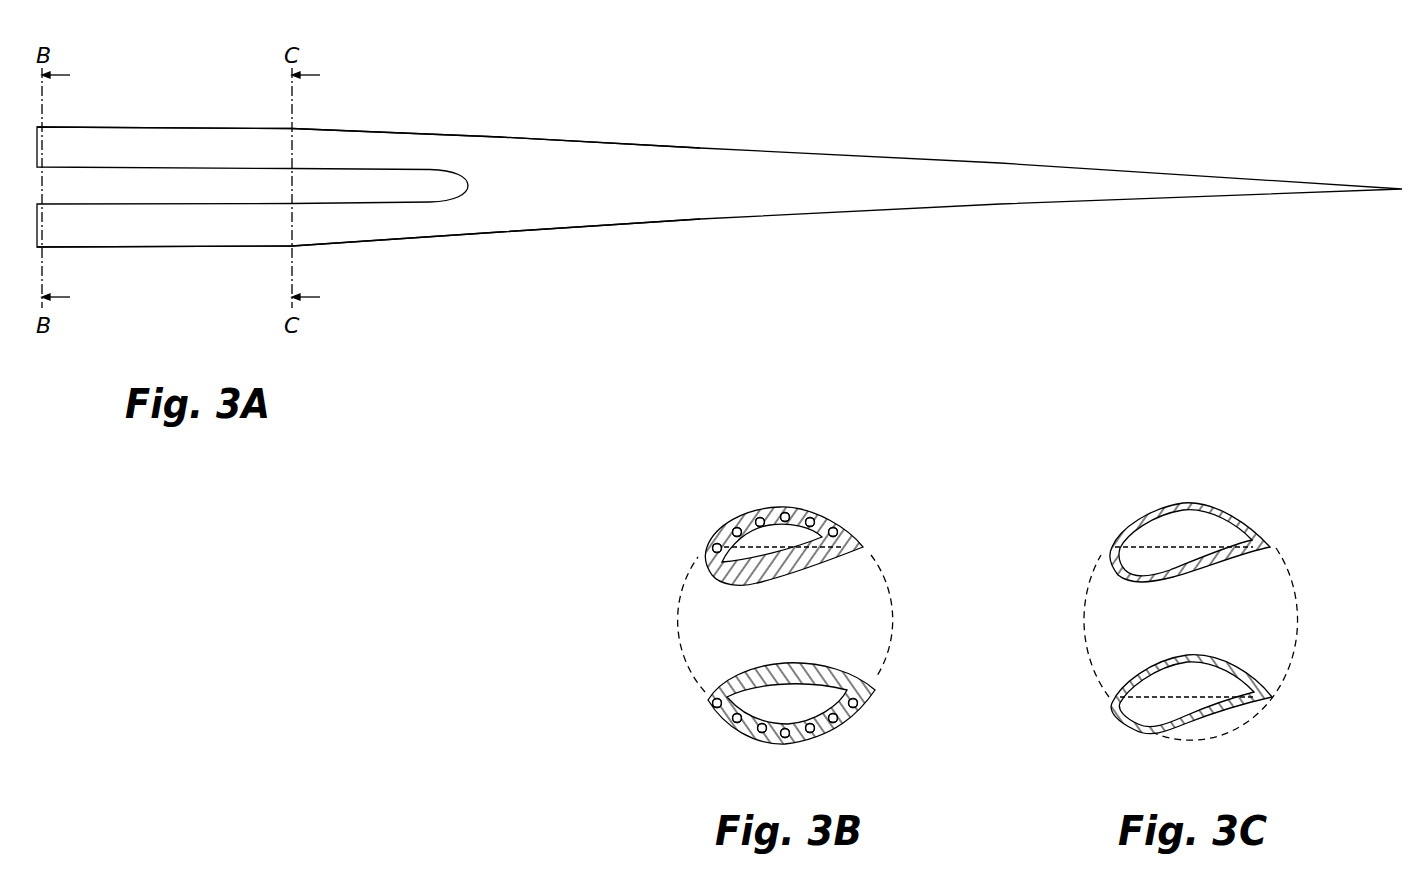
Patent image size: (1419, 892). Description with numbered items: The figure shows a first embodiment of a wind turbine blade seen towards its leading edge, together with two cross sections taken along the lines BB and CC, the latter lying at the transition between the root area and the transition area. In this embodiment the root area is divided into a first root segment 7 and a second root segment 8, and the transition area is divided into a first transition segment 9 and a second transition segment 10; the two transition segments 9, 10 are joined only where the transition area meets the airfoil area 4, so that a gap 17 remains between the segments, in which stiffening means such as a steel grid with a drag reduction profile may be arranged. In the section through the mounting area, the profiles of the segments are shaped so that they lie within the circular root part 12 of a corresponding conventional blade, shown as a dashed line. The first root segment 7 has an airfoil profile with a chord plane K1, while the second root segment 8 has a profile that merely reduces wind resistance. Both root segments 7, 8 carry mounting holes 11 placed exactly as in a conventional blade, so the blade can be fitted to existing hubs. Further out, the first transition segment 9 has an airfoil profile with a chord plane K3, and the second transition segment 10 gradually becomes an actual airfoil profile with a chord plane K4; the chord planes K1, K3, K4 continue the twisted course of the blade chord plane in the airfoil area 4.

In FIG. 3A, the airfoil area 4 is at (912, 171).
In FIG. 3A, the first root segment 7 is at (155, 141).
In FIG. 3B, the first root segment 7 is at (725, 527).
In FIG. 3A, the second root segment 8 is at (162, 237).
In FIG. 3B, the second root segment 8 is at (719, 720).
In FIG. 3A, the first transition segment 9 is at (385, 142).
In FIG. 3C, the first transition segment 9 is at (1133, 521).
In FIG. 3A, the second transition segment 10 is at (400, 233).
In FIG. 3C, the second transition segment 10 is at (1110, 712).
In FIG. 3B, the mounting holes 11 is at (792, 514).
In FIG. 3B, the circular root part 12 is at (890, 593).
In FIG. 3A, the gap 17 is at (425, 183).
In FIG. 3B, the chord plane K1 is at (820, 545).
In FIG. 3C, the chord plane K3 is at (1213, 544).
In FIG. 3C, the chord plane K4 is at (1216, 697).